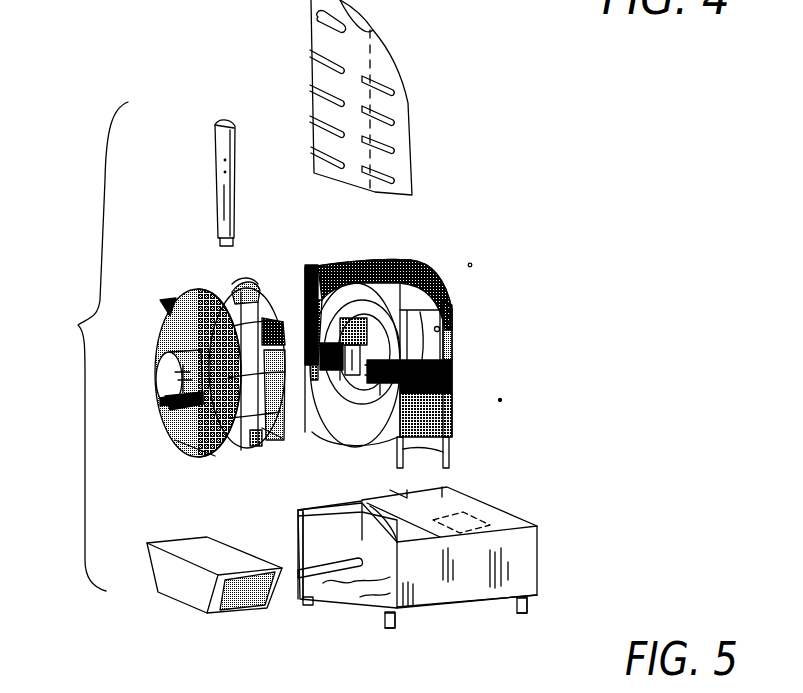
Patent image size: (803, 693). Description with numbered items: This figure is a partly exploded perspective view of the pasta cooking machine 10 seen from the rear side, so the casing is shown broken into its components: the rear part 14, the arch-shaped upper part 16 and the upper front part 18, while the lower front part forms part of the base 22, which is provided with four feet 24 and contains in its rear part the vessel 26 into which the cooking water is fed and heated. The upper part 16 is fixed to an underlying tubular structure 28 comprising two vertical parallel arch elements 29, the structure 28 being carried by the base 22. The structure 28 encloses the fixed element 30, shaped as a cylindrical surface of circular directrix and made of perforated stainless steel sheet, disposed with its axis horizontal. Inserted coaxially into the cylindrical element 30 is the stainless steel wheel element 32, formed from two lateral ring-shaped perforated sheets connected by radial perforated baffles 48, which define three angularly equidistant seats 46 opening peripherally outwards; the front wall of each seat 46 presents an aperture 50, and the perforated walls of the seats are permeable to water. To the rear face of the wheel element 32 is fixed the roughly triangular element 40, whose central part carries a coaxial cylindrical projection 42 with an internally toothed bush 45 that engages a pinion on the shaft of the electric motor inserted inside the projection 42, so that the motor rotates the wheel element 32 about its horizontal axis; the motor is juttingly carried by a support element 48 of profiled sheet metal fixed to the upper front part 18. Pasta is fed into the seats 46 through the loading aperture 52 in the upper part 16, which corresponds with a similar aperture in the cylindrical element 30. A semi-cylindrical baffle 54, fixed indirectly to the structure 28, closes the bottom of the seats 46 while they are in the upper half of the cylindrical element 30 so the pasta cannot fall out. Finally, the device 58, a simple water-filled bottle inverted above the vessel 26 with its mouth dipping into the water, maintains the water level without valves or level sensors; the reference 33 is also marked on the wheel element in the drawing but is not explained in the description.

The pasta cooking machine 10 is at (72, 323).
The rear part 14 is at (312, 62).
The upper part 16 is at (420, 262).
The upper front part 18 is at (473, 577).
The base 22 is at (432, 612).
The feet 24 is at (385, 618).
The vessel 26 is at (184, 586).
The tubular structure 28 is at (453, 413).
The arch elements 29 is at (449, 452).
The cylindrical element 30 is at (322, 483).
The wheel element 32 is at (250, 282).
The wheel segments 33 is at (190, 447).
The element of roughly triangular shape 40 is at (170, 312).
The cylindrical projection 42 is at (165, 405).
The bush 45 is at (162, 380).
The seats 46 is at (331, 360).
The radial baffles 48 is at (270, 320).
The aperture 50 is at (240, 288).
The loading aperture 52 is at (440, 328).
The semi-cylindrical baffle 54 is at (345, 443).
The device 58 is at (210, 156).